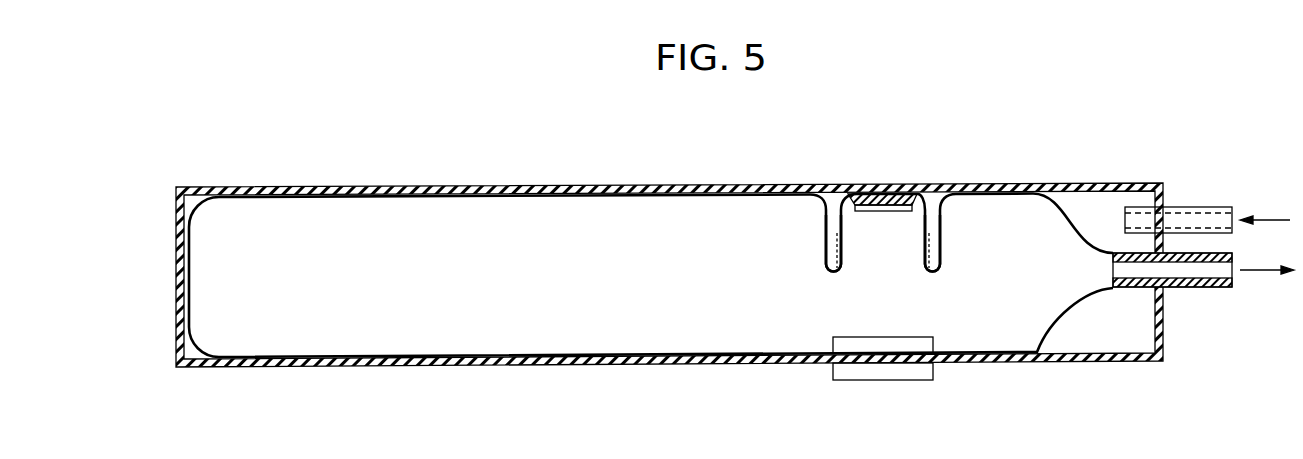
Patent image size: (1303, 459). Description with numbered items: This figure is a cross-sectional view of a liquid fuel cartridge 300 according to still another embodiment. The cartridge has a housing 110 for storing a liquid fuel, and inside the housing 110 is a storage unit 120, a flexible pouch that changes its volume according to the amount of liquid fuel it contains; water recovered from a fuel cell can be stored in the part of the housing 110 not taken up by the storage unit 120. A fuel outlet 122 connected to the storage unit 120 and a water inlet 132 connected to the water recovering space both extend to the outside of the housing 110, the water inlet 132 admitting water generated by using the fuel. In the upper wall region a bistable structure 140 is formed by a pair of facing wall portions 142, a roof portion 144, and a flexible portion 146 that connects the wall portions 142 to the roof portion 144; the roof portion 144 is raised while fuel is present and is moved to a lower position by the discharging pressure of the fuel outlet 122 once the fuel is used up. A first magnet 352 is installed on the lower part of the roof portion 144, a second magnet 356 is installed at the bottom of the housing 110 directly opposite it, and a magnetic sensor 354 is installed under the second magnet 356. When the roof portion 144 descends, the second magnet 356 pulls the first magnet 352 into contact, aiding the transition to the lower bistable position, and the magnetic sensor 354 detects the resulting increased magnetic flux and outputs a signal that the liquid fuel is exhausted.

The liquid fuel cartridge 300 is at (383, 134).
The housing 110 is at (722, 364).
The storage unit 120 is at (1072, 327).
The fuel outlet 122 is at (1208, 288).
The water inlet 132 is at (1208, 206).
The bistable structure 140 is at (893, 190).
The wall portions 142 is at (925, 258).
The roof portion 144 is at (912, 183).
The flexible portion 146 is at (833, 186).
The first magnet 352 is at (879, 212).
The magnetic sensor 354 is at (933, 376).
The second magnet 356 is at (933, 339).